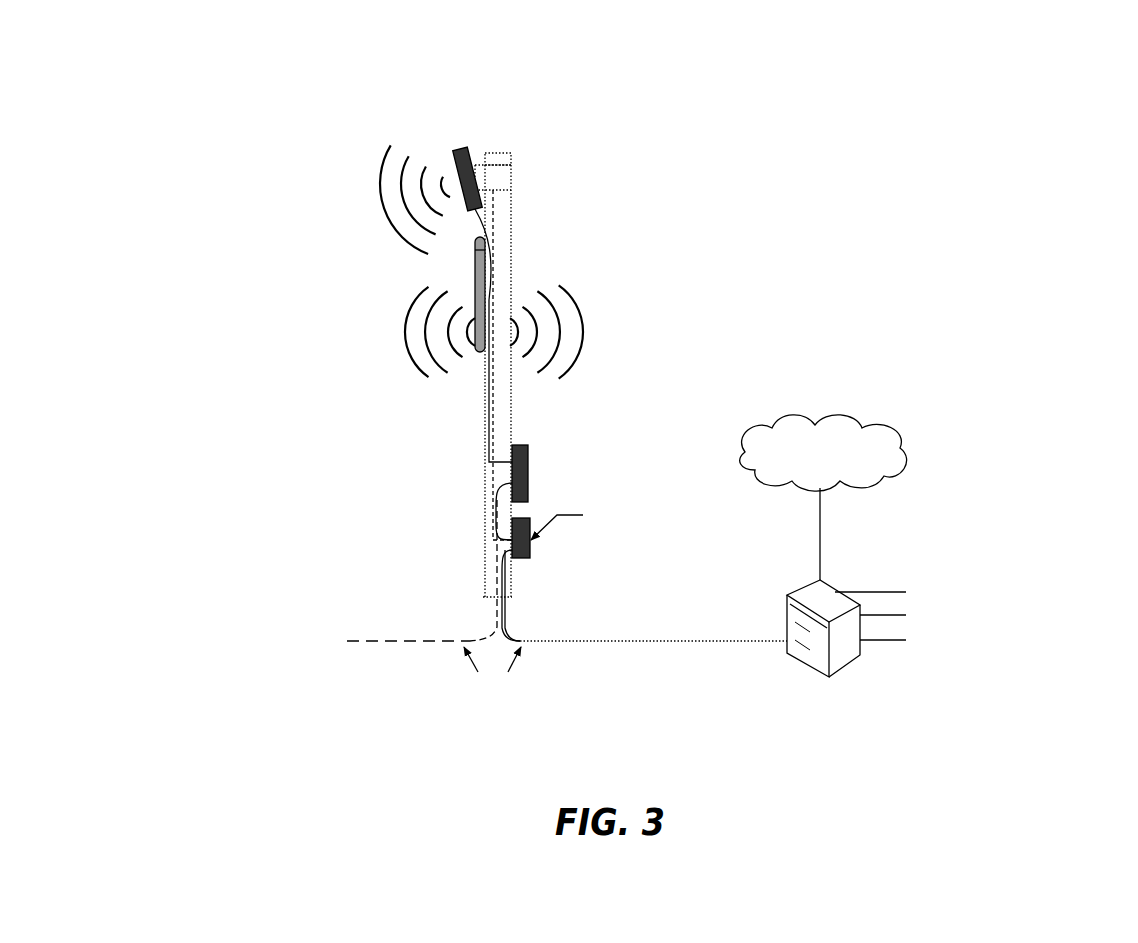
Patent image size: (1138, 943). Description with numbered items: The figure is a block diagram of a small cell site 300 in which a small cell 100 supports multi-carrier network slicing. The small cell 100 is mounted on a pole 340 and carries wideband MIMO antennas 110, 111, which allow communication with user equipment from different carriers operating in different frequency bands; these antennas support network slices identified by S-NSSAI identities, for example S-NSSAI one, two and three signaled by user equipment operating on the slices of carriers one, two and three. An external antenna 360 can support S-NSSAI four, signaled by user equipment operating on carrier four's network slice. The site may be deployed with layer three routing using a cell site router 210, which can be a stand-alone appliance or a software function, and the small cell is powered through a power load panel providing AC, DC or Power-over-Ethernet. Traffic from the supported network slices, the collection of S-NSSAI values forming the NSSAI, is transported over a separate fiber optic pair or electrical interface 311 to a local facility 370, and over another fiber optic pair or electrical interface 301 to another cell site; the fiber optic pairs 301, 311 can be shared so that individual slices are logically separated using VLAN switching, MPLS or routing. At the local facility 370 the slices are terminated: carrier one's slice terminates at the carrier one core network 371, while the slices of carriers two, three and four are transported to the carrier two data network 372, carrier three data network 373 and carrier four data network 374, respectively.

The small cell site 300 is at (312, 76).
The pole 340 is at (511, 207).
The external antenna 360 is at (465, 150).
The small cell 100 is at (477, 262).
The wideband MIMO antenna 110 is at (461, 348).
The wideband MIMO antenna 111 is at (478, 338).
The cell site router 210 is at (528, 470).
The fiber optic pair 301 is at (368, 645).
The fiber optic pair 311 is at (756, 645).
The local facility 370 is at (787, 598).
The carrier 1 core network 371 is at (906, 434).
The carrier 2 data network 372 is at (1040, 640).
The carrier 3 data network 373 is at (1040, 616).
The carrier 4 data network 374 is at (1040, 592).